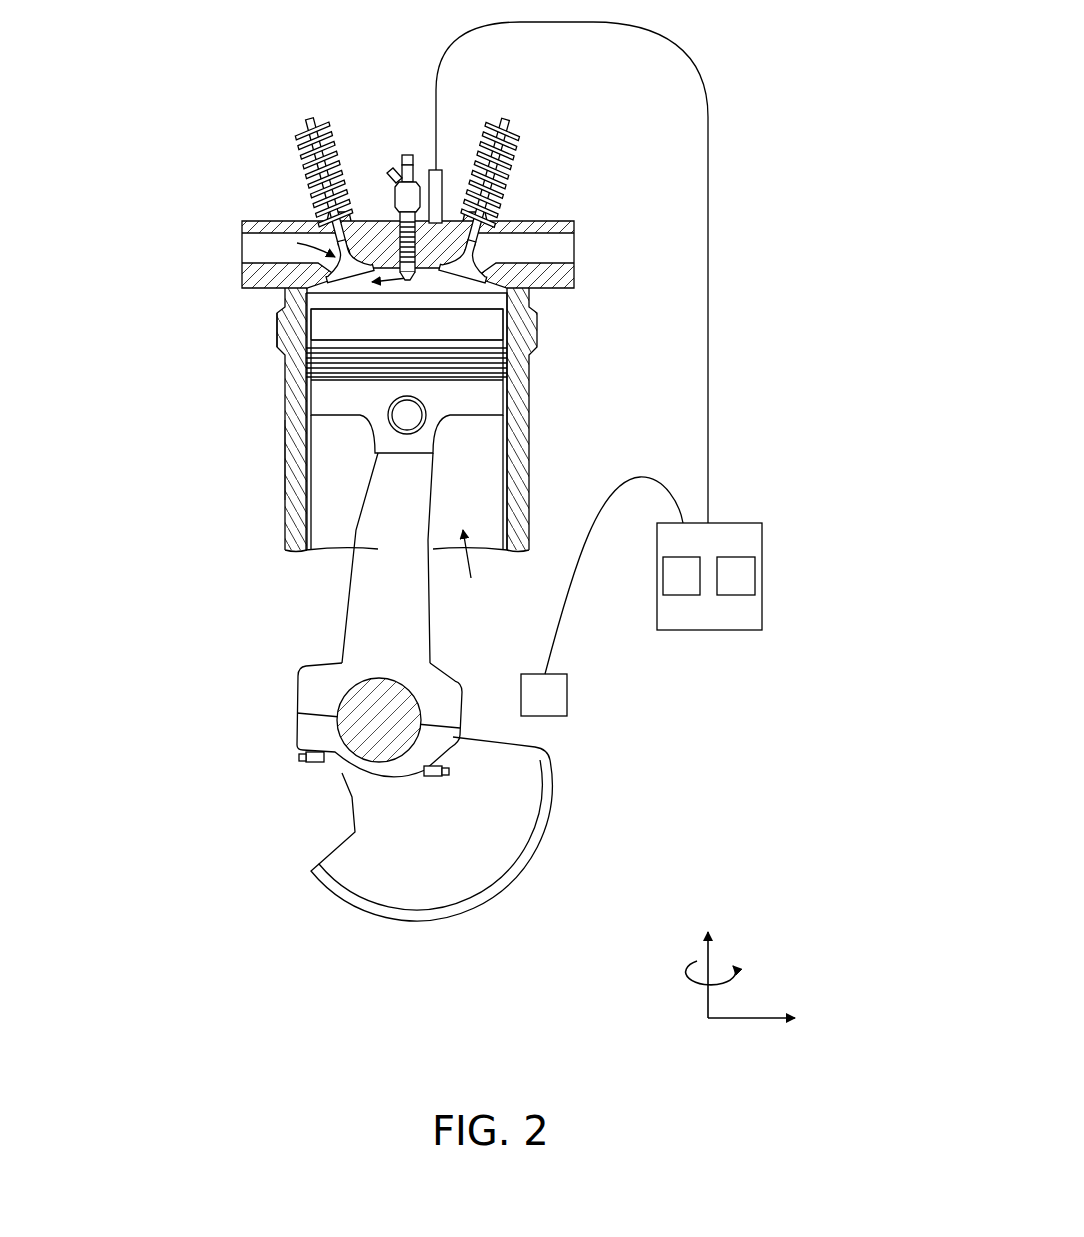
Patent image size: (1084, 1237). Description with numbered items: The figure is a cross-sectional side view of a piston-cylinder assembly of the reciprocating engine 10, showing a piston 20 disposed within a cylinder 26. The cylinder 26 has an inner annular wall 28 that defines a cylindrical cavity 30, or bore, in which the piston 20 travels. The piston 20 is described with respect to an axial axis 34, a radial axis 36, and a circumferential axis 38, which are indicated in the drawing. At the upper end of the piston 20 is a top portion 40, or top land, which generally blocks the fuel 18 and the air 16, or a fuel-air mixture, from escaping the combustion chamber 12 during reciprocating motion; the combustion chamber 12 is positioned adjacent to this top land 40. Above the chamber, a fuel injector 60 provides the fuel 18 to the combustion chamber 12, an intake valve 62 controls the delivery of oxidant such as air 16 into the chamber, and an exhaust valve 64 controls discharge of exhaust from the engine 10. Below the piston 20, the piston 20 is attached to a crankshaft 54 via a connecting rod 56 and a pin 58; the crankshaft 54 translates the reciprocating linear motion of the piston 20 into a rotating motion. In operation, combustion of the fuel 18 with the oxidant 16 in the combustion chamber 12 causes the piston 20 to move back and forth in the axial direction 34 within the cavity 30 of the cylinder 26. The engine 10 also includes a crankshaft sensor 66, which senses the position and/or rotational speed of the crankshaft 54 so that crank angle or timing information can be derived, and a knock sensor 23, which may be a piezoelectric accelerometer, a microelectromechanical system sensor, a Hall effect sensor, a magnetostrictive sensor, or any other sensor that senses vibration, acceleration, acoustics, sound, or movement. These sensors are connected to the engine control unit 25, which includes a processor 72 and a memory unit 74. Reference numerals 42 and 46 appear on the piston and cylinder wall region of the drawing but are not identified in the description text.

The reciprocating engine 10 is at (582, 150).
The combustion chamber 12 is at (458, 283).
The air 16 is at (297, 240).
The fuel 18 is at (405, 150).
The piston 20 is at (480, 405).
The knock sensor 23 is at (445, 192).
The engine control unit 25 is at (752, 523).
The cylinder 26 is at (285, 415).
The inner annular wall 28 is at (306, 492).
The cylindrical cavity 30 is at (348, 528).
The axial axis 34 is at (705, 948).
The radial axis 36 is at (748, 1022).
The circumferential axis 38 is at (738, 972).
The top portion 40 is at (477, 332).
The cylinder liner 42 is at (286, 346).
The piston rings 46 is at (510, 373).
The crankshaft 54 is at (352, 862).
The connecting rod 56 is at (415, 606).
The pin 58 is at (407, 436).
The fuel injector 60 is at (412, 158).
The intake valve 62 is at (310, 117).
The exhaust valve 64 is at (502, 120).
The crankshaft sensor 66 is at (570, 697).
The processor 72 is at (681, 596).
The memory unit 74 is at (734, 596).